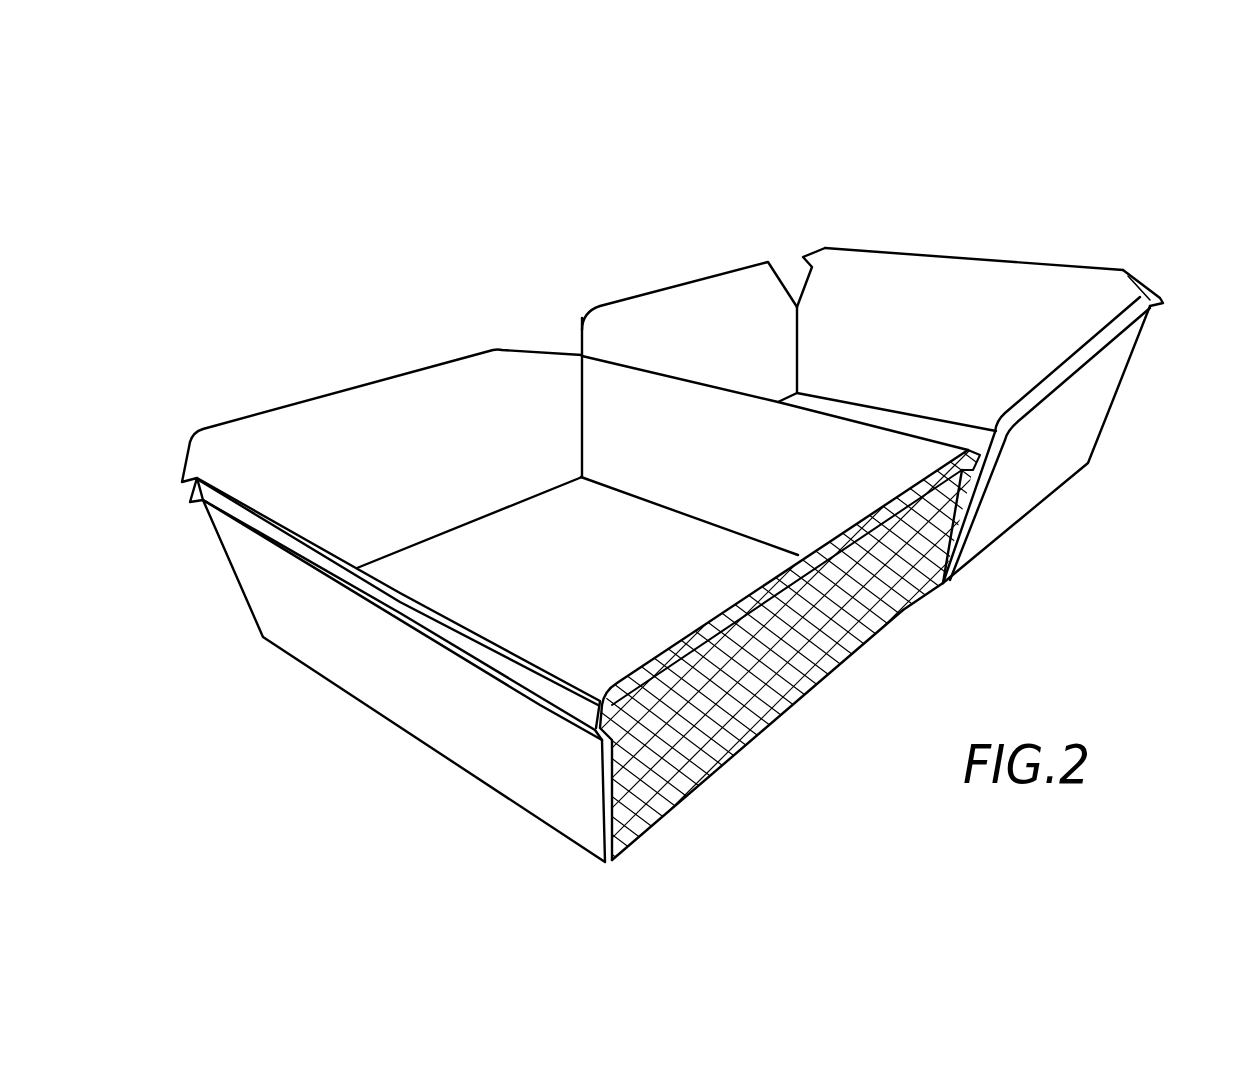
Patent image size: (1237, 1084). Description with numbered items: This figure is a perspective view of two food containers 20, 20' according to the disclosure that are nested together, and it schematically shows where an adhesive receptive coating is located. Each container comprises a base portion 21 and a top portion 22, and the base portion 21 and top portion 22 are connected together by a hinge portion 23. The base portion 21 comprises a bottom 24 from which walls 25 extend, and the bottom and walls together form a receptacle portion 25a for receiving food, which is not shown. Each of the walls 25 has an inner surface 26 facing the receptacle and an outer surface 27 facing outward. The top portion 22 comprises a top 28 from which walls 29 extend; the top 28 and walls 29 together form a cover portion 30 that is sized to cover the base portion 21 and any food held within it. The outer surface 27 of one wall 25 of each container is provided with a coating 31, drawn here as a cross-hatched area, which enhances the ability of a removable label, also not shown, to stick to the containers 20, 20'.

The food container 20 is at (404, 681).
The food container 20' is at (392, 591).
The base portion 21 is at (315, 381).
The top portion 22 is at (823, 237).
The hinge portion 23 is at (610, 358).
The bottom 24 is at (532, 646).
The walls 25 is at (412, 418).
The receptacle portion 25a is at (972, 490).
The inner surface 26 is at (457, 428).
The outer surface 27 is at (515, 760).
The top 28 is at (982, 438).
The walls 29 is at (682, 283).
The cover portion 30 is at (890, 417).
The coating 31 is at (900, 617).